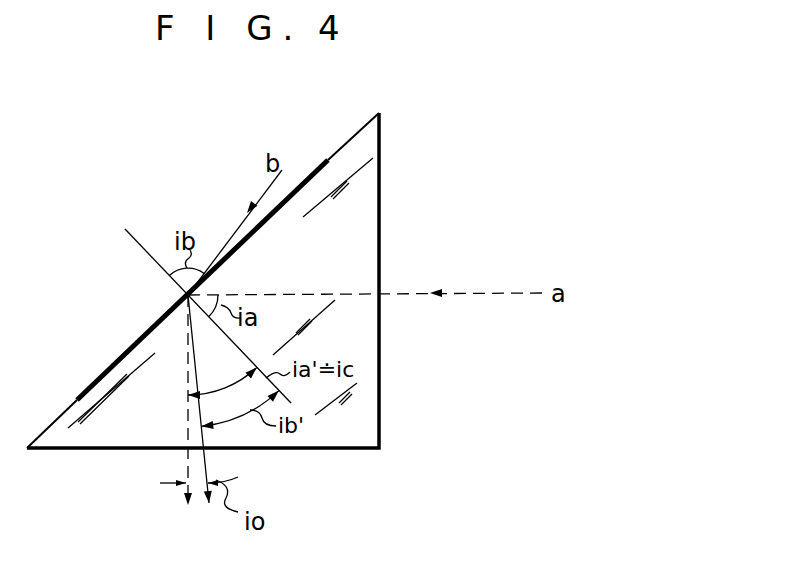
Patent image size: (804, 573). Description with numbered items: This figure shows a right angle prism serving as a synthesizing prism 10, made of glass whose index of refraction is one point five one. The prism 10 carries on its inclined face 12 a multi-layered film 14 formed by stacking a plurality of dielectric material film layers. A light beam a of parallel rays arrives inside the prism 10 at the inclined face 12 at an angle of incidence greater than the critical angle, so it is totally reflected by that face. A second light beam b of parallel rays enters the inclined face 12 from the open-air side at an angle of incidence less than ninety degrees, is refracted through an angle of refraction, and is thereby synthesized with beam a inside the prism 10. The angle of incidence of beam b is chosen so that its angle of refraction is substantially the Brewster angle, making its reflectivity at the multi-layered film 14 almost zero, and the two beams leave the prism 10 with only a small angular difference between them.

The synthesizing prism 10 is at (379, 223).
The inclined face 12 is at (348, 144).
The multi-layered film 14 is at (120, 359).